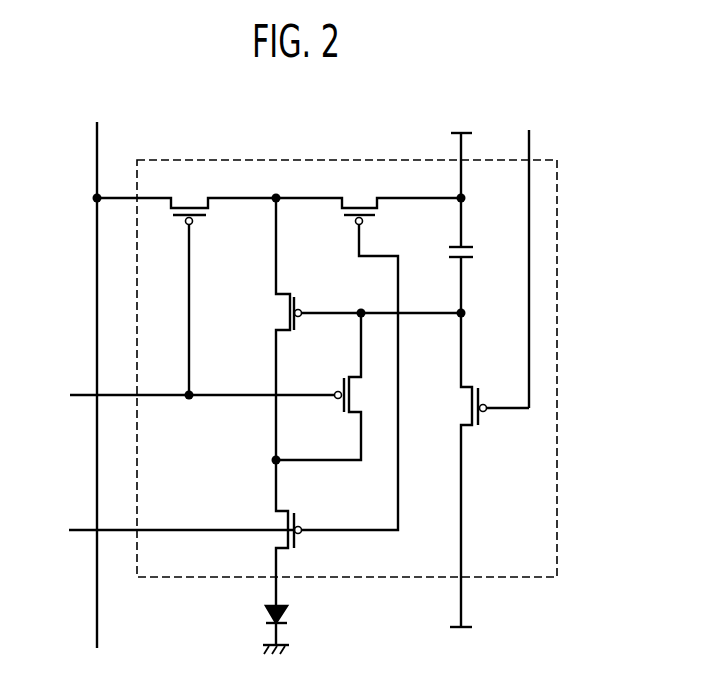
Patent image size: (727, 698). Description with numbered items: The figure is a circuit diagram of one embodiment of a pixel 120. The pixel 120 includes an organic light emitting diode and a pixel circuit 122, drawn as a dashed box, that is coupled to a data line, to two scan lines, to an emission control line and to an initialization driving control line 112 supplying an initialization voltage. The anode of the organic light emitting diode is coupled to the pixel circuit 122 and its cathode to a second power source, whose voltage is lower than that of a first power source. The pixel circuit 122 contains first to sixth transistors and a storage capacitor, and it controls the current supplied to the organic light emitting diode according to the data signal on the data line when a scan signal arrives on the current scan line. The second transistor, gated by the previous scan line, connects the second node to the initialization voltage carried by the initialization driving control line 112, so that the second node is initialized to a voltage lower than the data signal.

The pixel 120 is at (618, 128).
The pixel circuit 122 is at (558, 195).
The initialization driving control line 112 is at (462, 525).